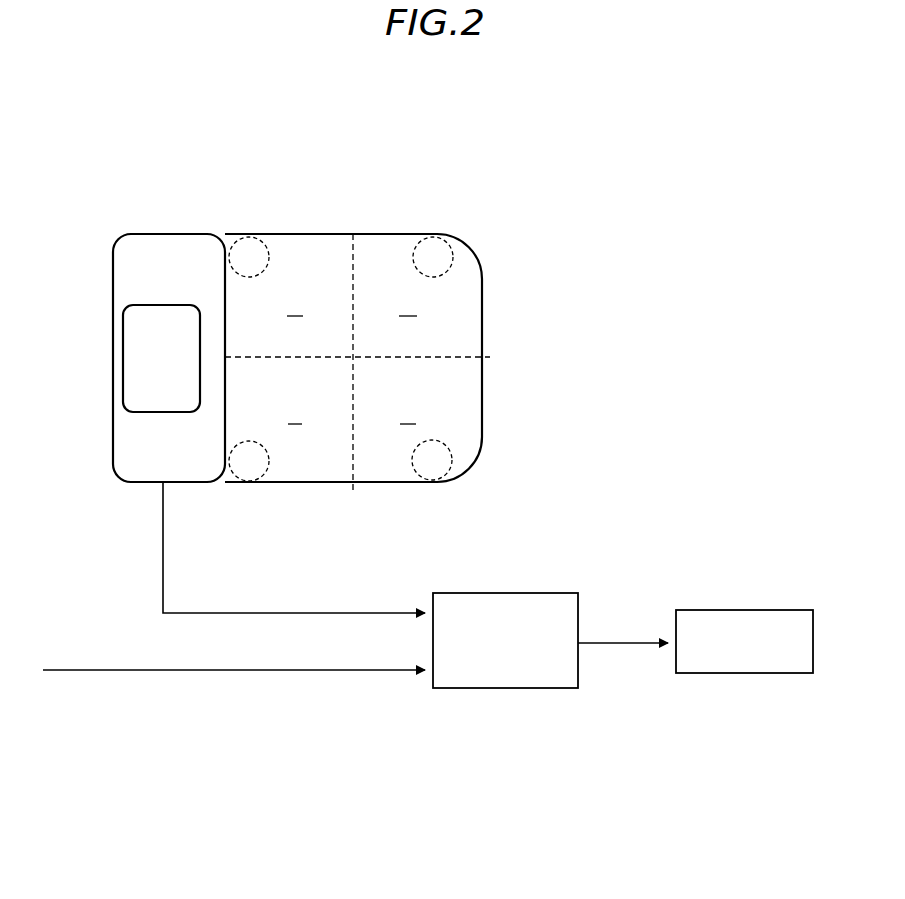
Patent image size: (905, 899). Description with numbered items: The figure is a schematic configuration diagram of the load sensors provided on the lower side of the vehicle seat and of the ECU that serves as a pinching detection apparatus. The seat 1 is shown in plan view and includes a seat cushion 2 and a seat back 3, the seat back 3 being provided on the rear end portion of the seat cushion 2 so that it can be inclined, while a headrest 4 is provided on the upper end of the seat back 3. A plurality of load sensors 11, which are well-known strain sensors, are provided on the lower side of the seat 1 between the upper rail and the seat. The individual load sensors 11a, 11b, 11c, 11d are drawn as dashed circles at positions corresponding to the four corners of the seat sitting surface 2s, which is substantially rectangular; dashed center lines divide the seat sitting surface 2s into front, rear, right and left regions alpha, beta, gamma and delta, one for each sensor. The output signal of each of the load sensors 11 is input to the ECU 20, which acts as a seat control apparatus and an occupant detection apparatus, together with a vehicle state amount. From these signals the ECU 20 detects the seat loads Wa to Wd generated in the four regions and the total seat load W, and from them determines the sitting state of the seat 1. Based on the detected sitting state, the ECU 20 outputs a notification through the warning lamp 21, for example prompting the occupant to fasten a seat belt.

The seat 1 is at (578, 212).
The seat cushion 2 is at (482, 337).
The seat sitting surface 2s is at (324, 246).
The seat back 3 is at (163, 233).
The headrest 4 is at (163, 304).
The load sensors 11 is at (377, 361).
The load sensor 11a is at (437, 236).
The load sensor 11b is at (433, 482).
The load sensor 11c is at (246, 240).
The load sensor 11d is at (247, 481).
The ECU 20 is at (537, 592).
The warning lamp 21 is at (772, 610).